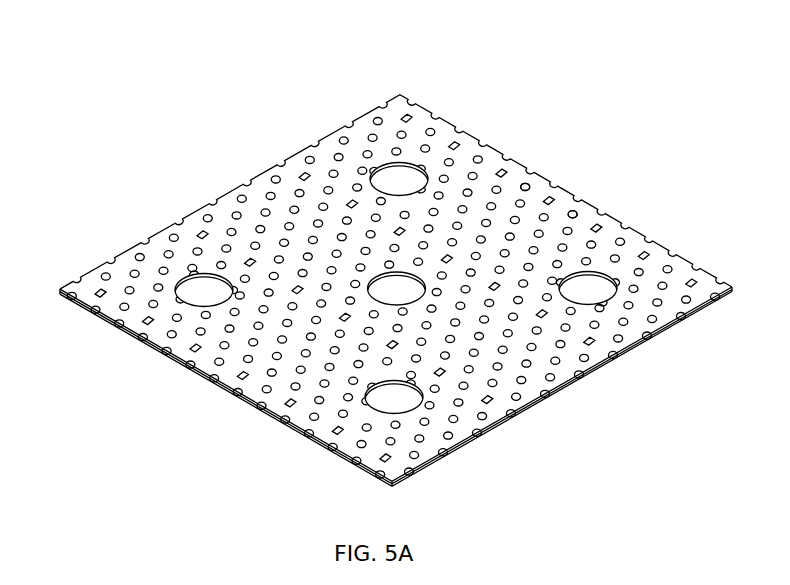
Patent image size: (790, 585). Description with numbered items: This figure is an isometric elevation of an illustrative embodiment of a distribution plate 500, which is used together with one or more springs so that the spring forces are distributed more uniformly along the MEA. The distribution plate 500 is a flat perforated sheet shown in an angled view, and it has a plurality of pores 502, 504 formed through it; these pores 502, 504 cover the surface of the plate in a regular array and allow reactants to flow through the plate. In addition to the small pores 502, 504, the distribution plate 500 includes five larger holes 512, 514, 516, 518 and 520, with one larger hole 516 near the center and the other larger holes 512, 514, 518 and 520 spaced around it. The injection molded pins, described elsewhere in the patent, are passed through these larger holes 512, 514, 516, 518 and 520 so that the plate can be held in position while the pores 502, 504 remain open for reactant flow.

The distribution plate 500 is at (181, 93).
The pore 502 is at (530, 187).
The pore 504 is at (580, 215).
The larger hole 512 is at (397, 177).
The larger hole 514 is at (203, 292).
The larger hole 516 is at (396, 289).
The larger hole 518 is at (393, 397).
The larger hole 520 is at (597, 292).